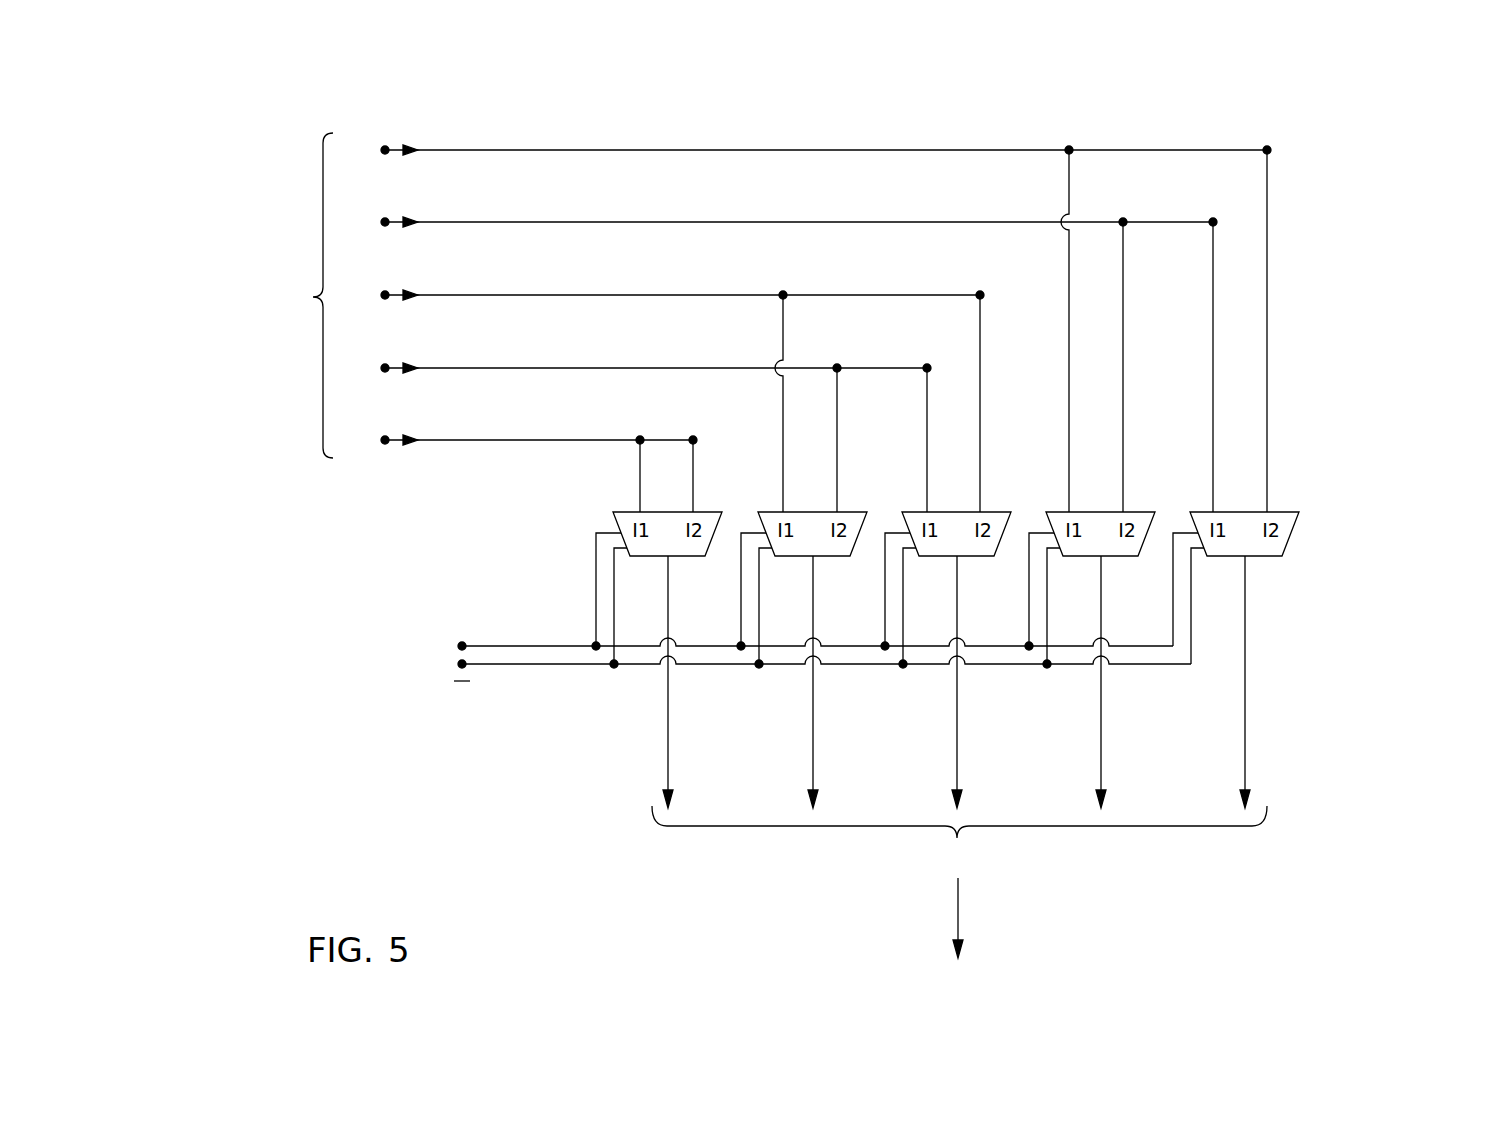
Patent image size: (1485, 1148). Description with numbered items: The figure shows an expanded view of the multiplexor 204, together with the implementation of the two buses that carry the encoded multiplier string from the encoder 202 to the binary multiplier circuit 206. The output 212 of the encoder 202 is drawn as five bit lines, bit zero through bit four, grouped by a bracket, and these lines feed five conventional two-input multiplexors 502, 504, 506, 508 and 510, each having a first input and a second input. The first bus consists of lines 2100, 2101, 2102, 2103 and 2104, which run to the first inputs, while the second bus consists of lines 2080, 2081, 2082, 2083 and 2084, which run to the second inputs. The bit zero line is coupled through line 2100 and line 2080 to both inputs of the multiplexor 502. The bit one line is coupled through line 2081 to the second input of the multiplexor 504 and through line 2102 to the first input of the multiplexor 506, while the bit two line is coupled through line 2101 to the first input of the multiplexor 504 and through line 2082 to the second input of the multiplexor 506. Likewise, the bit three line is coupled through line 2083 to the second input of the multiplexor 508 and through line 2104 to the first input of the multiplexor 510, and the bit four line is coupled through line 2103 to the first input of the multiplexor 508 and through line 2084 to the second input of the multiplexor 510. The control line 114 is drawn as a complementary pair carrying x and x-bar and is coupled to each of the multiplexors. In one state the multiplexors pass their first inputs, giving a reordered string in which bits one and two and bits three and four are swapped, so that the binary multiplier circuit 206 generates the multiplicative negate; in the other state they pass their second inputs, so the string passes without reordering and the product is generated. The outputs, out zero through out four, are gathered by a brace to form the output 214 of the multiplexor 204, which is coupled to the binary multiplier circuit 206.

The multiplexor 204 is at (1368, 110).
The encoder 202 is at (302, 185).
The output of encoder 212 is at (308, 297).
The line of bus 210 2100 is at (640, 468).
The line of bus 208 2080 is at (695, 464).
The line of bus 210 2101 is at (783, 406).
The line of bus 208 2081 is at (839, 448).
The line of bus 210 2102 is at (927, 389).
The line of bus 208 2082 is at (982, 419).
The line of bus 210 2103 is at (1069, 345).
The line of bus 208 2083 is at (1125, 367).
The line of bus 210 2104 is at (1213, 299).
The line of bus 208 2084 is at (1269, 296).
The multiplexor 502 is at (685, 557).
The multiplexor 504 is at (830, 557).
The multiplexor 506 is at (974, 557).
The multiplexor 508 is at (1118, 557).
The multiplexor 510 is at (1262, 557).
The control line 114 is at (811, 620).
The output of multiplexor 214 is at (985, 713).
The binary multiplier circuit 206 is at (889, 920).